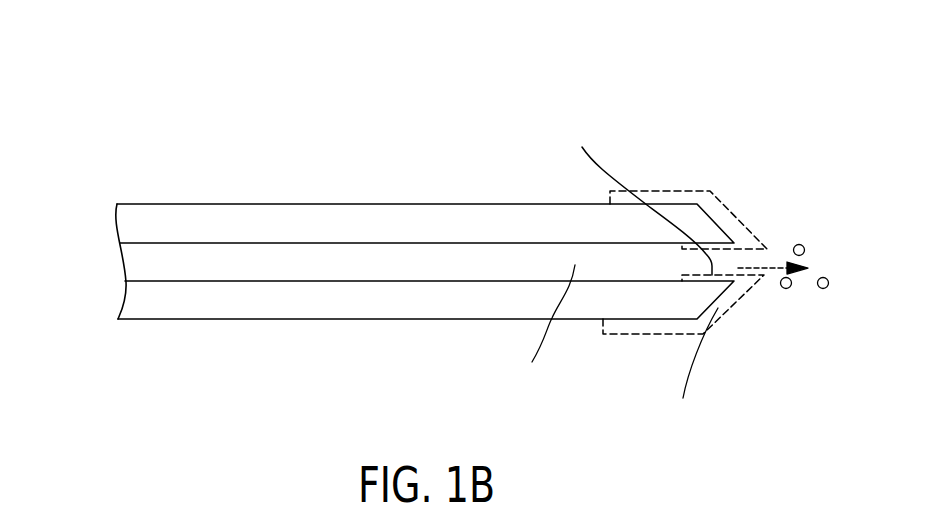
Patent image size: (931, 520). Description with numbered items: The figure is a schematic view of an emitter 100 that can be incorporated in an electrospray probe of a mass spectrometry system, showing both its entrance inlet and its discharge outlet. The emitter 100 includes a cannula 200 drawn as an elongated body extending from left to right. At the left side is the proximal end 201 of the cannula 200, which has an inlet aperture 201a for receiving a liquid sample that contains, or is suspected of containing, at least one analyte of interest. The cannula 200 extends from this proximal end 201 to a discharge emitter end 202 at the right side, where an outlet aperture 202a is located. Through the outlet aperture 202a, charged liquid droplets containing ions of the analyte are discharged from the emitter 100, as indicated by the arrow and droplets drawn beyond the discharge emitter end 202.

The emitter 100 is at (150, 83).
The cannula 200 is at (257, 204).
The proximal end 201 is at (125, 227).
The inlet aperture 201a is at (125, 270).
The discharge emitter end 202 is at (735, 214).
The outlet aperture 202a is at (766, 270).